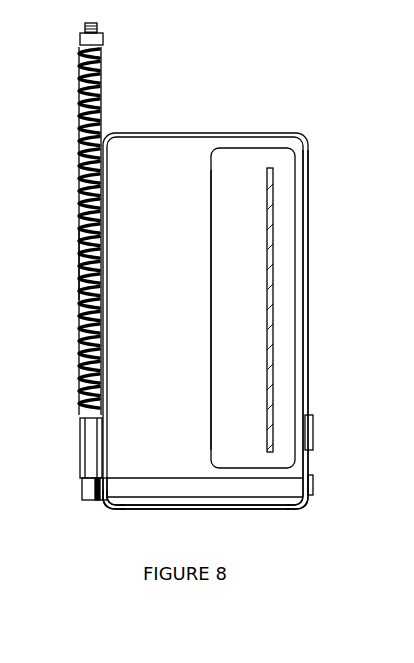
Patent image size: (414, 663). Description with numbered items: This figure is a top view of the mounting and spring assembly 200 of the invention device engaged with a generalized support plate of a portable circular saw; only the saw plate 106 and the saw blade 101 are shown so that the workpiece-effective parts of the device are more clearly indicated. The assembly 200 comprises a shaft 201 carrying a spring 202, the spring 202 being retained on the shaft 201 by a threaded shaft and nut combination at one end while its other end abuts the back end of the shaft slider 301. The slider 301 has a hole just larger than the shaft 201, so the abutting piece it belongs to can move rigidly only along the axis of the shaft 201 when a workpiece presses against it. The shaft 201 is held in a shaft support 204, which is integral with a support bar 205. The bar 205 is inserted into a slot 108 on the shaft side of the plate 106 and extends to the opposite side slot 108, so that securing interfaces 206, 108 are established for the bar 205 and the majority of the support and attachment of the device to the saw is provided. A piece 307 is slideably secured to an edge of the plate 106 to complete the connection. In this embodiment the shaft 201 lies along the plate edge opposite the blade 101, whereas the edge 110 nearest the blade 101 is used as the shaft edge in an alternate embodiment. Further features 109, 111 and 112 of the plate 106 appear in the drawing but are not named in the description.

The assembly 200 is at (109, 219).
The spring 202 is at (78, 190).
The shaft 201 is at (87, 258).
The saw plate 106 is at (201, 121).
The inner panel 109 is at (262, 140).
The edge 110 is at (309, 170).
The panel edge 111 is at (211, 238).
The saw blade 101 is at (281, 252).
The piece 307 is at (314, 437).
The shaft slider 301 is at (87, 447).
The shaft support 204 is at (88, 494).
The securing interface 206 is at (97, 503).
The slot 108 is at (202, 546).
The support bar 205 is at (147, 496).
The bottom wall 112 is at (243, 514).